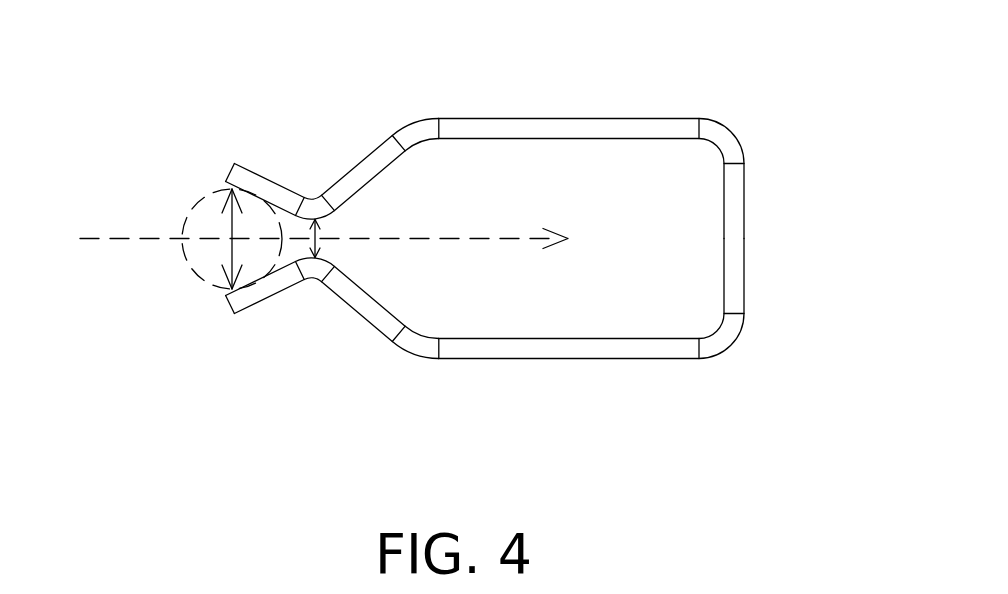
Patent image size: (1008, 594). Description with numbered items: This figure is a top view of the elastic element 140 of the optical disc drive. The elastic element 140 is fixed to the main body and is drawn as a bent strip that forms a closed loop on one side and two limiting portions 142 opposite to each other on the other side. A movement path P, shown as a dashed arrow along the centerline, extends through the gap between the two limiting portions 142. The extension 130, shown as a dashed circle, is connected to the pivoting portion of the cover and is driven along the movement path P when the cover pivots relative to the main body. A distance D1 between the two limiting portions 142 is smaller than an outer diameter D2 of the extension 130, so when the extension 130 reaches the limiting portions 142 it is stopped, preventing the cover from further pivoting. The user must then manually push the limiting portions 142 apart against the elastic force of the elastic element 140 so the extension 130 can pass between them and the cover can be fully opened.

The extension 130 is at (204, 194).
The elastic element 140 is at (786, 180).
The limiting portions 142 is at (357, 175).
The distance between the two limiting portions D1 is at (316, 234).
The outer diameter of the extension D2 is at (230, 232).
The movement path P is at (487, 237).